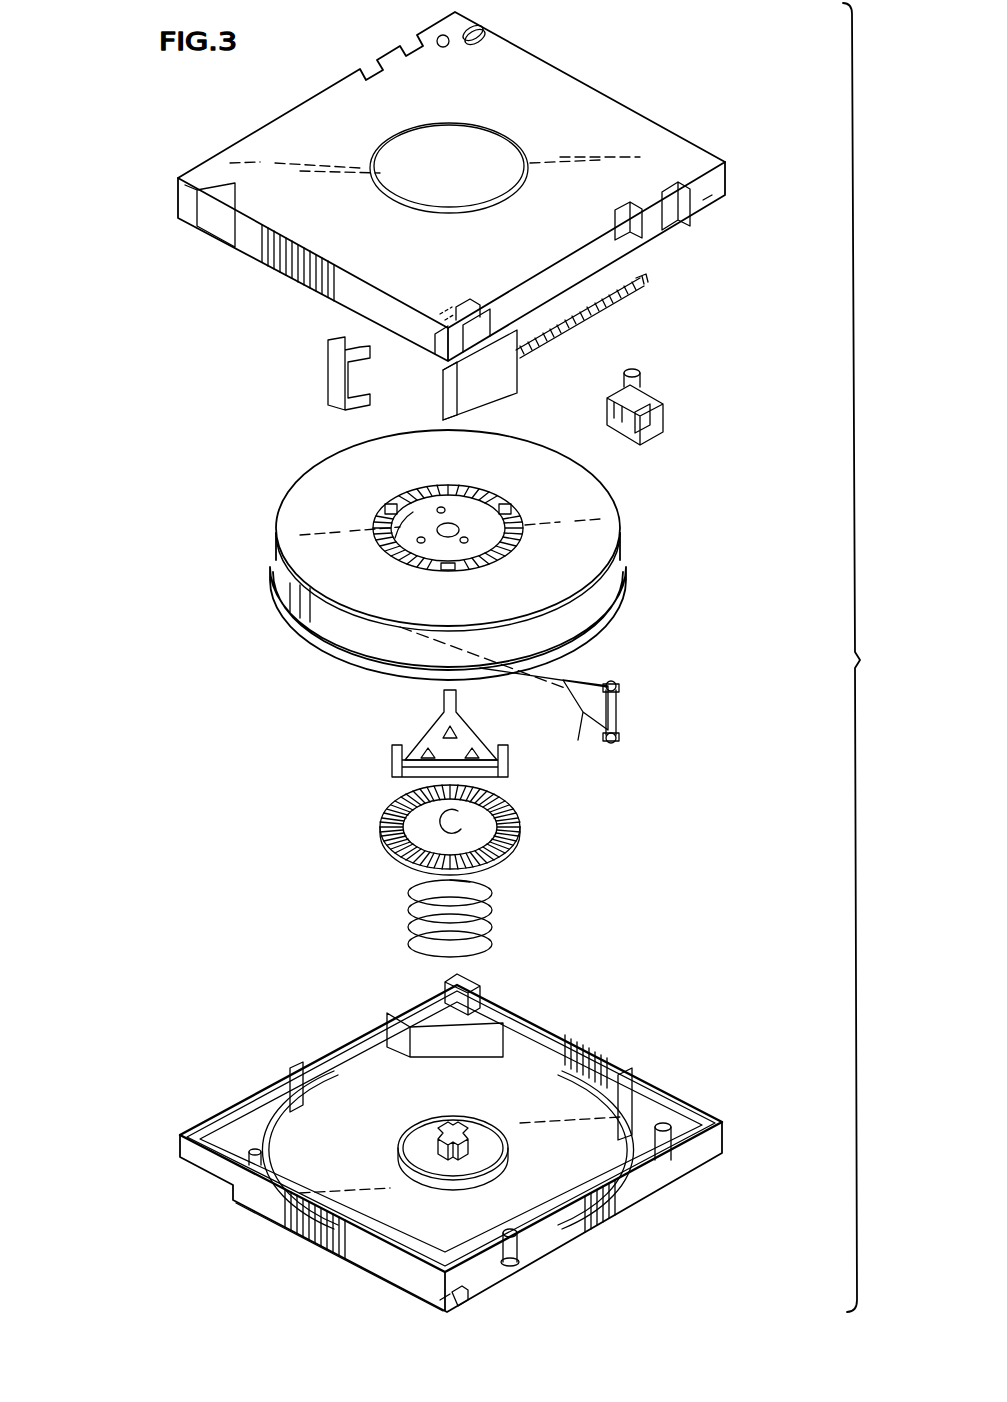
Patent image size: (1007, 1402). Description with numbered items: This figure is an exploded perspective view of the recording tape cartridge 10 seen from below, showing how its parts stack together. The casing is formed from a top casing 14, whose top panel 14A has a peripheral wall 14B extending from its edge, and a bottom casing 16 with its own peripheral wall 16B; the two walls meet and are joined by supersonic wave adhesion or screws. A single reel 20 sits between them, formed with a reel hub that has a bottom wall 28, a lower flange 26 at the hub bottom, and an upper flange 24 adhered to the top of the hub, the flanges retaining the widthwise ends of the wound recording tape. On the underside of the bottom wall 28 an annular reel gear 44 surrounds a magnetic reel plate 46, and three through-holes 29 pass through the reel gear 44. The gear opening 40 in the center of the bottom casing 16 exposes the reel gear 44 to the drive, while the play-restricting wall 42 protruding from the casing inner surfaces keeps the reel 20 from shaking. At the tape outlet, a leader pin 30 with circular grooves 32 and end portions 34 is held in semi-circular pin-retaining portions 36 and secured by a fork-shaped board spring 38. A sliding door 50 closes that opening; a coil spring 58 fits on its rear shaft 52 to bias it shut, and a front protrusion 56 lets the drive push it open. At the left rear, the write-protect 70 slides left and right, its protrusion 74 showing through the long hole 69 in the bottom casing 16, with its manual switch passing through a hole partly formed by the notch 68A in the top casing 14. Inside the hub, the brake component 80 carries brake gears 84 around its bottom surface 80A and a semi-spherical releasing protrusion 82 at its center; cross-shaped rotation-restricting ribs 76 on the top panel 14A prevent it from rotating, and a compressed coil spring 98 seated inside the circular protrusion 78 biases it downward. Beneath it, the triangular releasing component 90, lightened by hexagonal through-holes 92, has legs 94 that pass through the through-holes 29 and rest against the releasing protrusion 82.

The recording tape cartridge 10 is at (438, 186).
The top casing 14 is at (481, 1130).
The top panel 14A is at (575, 1090).
The peripheral wall 14B is at (258, 1205).
The bottom casing 16 is at (438, 186).
The peripheral wall 16B is at (190, 204).
The reel 20 is at (456, 540).
The upper flange 24 is at (622, 600).
The lower flange 26 is at (580, 486).
The bottom wall 28 is at (490, 500).
The through-holes 29 is at (392, 505).
The leader pin 30 is at (546, 708).
The circular grooves 32 is at (620, 688).
The end portions 34 is at (613, 680).
The pin-retaining portions 36 is at (478, 303).
The board spring 38 is at (335, 374).
The gear opening 40 is at (492, 128).
The play-restricting wall 42 is at (425, 1032).
The reel gear 44 is at (508, 512).
The reel plate 46 is at (413, 537).
The door 50 is at (442, 378).
The shaft 52 is at (602, 316).
The protrusion 56 is at (448, 404).
The coil spring 58 is at (636, 302).
The notch 68A is at (485, 990).
The long hole 69 is at (486, 35).
The write-protect 70 is at (671, 395).
The protrusion 74 is at (640, 370).
The rotation-restricting ribs 76 is at (458, 1130).
The circular protrusion 78 is at (435, 1180).
The brake component 80 is at (459, 815).
The bottom surface 80A is at (478, 824).
The releasing protrusion 82 is at (465, 820).
The brake gears 84 is at (390, 820).
The releasing component 90 is at (424, 732).
The through-holes 92 is at (468, 750).
The legs 94 is at (392, 766).
The compressed coil spring 98 is at (492, 897).